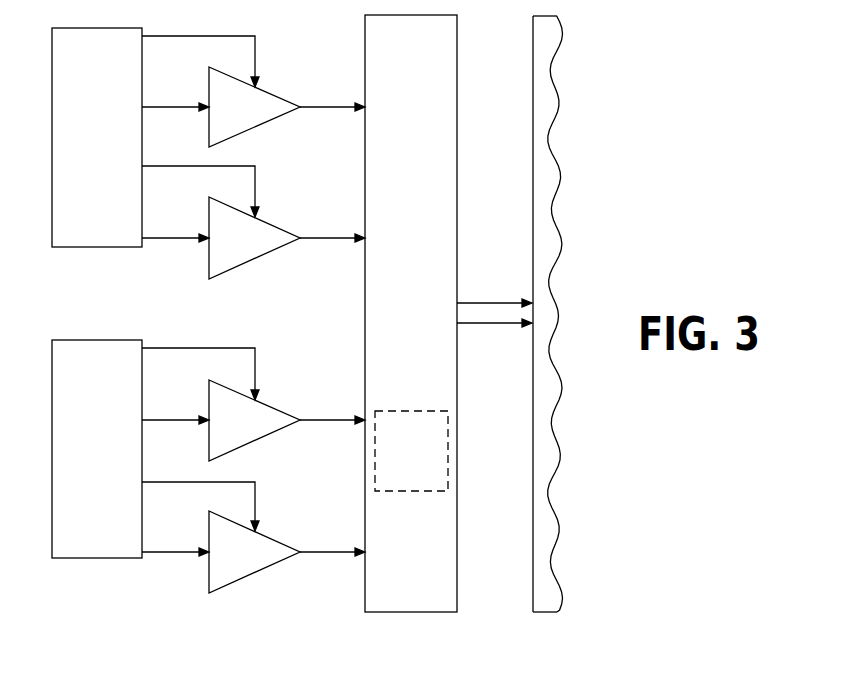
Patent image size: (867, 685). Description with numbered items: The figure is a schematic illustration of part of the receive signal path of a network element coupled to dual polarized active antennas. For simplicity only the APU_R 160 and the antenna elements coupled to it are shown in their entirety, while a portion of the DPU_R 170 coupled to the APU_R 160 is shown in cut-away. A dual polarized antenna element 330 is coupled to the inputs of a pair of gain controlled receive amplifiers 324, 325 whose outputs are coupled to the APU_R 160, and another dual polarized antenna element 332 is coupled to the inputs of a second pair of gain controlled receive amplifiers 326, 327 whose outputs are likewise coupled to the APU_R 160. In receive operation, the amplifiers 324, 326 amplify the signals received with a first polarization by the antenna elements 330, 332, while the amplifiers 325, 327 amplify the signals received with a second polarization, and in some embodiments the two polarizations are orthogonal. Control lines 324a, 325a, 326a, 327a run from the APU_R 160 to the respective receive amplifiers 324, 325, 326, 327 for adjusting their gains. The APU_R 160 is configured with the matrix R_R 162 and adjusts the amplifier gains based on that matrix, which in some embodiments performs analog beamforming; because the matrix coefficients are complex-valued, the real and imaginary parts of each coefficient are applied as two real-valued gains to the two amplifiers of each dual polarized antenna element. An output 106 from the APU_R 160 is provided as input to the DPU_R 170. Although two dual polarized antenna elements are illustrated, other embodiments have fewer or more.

The dual polarized antenna element 330 is at (118, 148).
The dual polarized antenna element 332 is at (118, 460).
The gain controlled receive amplifier 324 is at (216, 121).
The gain controlled receive amplifier 325 is at (216, 252).
The gain controlled receive amplifier 326 is at (216, 434).
The gain controlled receive amplifier 327 is at (216, 566).
The control line 324a is at (256, 53).
The control line 325a is at (256, 183).
The control line 326a is at (256, 365).
The control line 327a is at (256, 499).
The APU_R 160 is at (433, 338).
The matrix R_R 162 is at (433, 478).
The output 106 is at (492, 302).
The DPU_R 170 is at (533, 94).